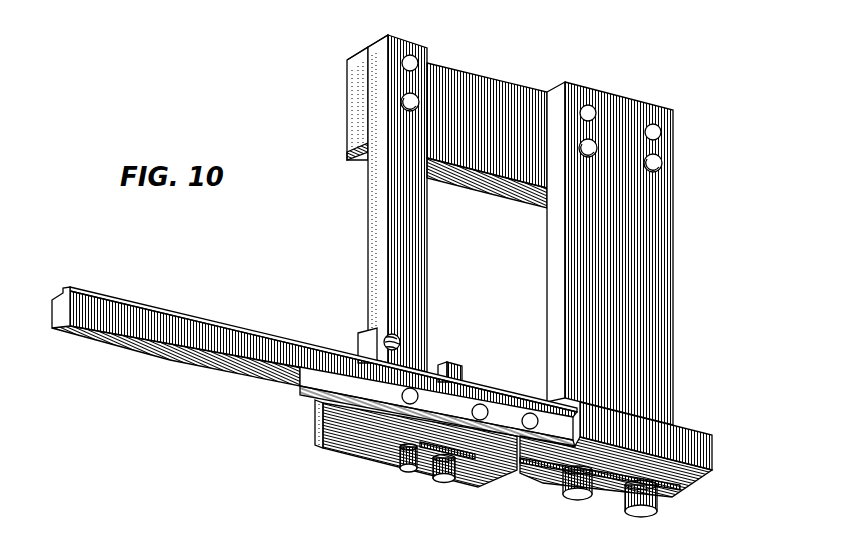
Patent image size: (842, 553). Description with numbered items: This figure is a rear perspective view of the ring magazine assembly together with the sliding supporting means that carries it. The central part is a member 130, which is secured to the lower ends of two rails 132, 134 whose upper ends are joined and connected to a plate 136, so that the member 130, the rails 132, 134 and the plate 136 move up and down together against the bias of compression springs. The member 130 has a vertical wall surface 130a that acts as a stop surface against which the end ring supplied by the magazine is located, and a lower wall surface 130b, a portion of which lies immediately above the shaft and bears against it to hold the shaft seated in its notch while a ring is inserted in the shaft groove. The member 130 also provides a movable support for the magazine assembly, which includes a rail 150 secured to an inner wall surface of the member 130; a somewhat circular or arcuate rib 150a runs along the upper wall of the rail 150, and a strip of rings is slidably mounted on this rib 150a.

The member 130 is at (704, 450).
The vertical wall surface 130a is at (572, 432).
The lower wall surface 130b is at (630, 463).
The rail 132 is at (663, 247).
The rail 134 is at (375, 208).
The plate 136 is at (487, 77).
The rail 150 is at (123, 340).
The arcuate rib 150a is at (70, 290).